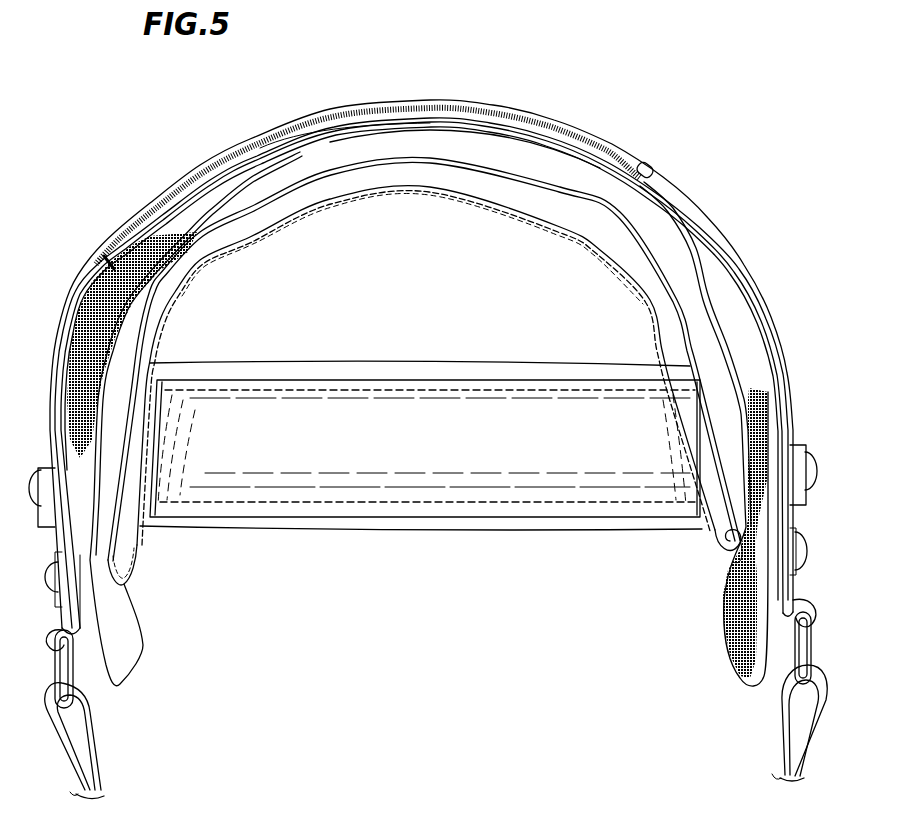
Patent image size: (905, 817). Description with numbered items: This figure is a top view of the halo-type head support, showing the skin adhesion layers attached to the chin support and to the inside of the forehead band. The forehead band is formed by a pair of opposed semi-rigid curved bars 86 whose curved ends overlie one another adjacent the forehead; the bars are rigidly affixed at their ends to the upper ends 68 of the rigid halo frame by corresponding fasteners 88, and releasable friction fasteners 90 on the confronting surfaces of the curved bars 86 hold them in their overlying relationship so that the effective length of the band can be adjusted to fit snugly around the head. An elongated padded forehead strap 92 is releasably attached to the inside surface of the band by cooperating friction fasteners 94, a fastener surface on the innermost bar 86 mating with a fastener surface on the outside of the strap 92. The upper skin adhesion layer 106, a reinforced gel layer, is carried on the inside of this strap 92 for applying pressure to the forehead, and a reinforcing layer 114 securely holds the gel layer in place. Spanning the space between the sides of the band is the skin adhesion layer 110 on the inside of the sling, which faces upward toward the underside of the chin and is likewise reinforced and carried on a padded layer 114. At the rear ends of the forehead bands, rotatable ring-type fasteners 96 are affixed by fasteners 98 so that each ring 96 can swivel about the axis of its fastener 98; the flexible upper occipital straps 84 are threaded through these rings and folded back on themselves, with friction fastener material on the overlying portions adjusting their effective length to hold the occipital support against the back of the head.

The upper ends of the halo frame 68 is at (55, 525).
The upper occipital straps 84 is at (95, 752).
The curved bars 86 is at (143, 218).
The fasteners 88 is at (38, 470).
The releasable friction fasteners 90 is at (493, 122).
The padded forehead strap 92 is at (373, 143).
The cooperating friction fasteners 94 is at (413, 130).
The ring-type fasteners 96 is at (62, 663).
The fasteners 98 is at (50, 585).
The upper skin adhesion layer 106 is at (550, 212).
The skin adhesion layer 110 is at (446, 451).
The reinforcing layer 114 is at (284, 372).